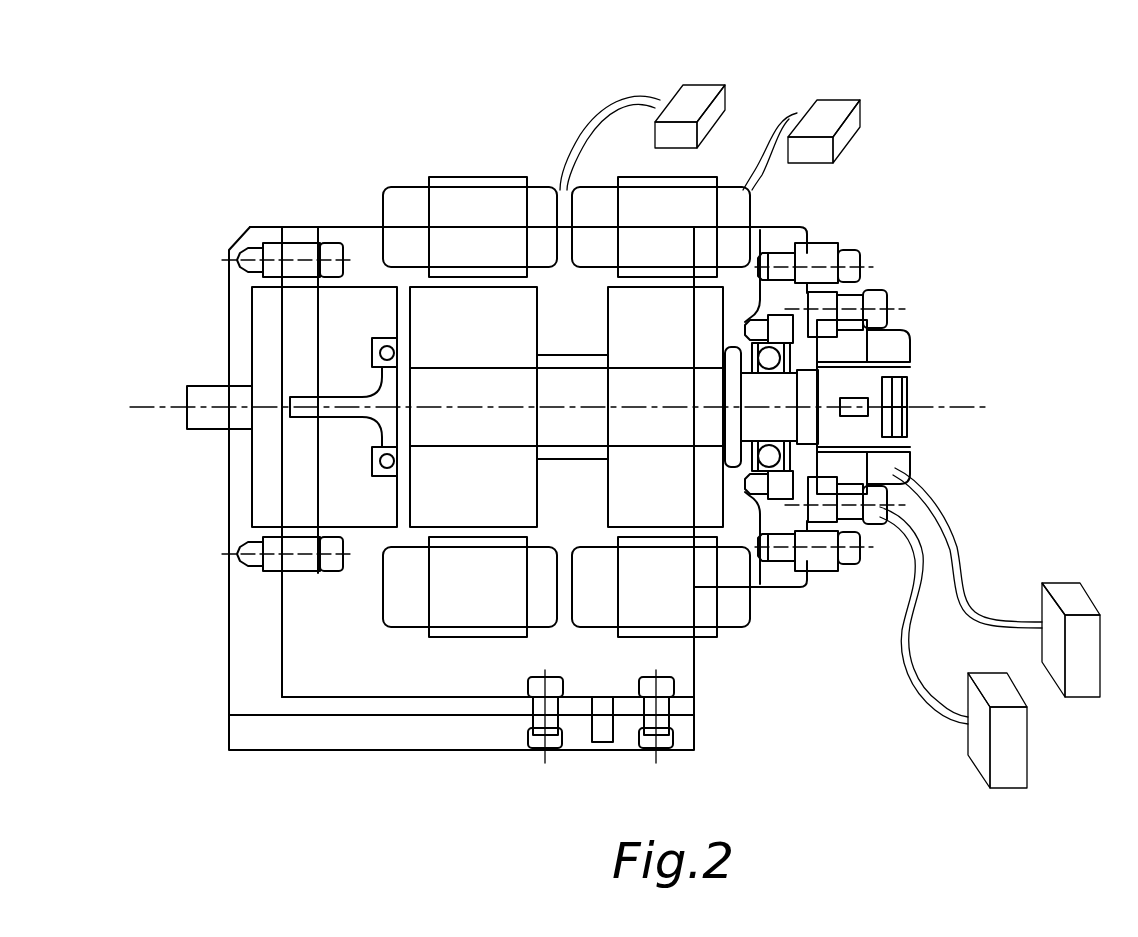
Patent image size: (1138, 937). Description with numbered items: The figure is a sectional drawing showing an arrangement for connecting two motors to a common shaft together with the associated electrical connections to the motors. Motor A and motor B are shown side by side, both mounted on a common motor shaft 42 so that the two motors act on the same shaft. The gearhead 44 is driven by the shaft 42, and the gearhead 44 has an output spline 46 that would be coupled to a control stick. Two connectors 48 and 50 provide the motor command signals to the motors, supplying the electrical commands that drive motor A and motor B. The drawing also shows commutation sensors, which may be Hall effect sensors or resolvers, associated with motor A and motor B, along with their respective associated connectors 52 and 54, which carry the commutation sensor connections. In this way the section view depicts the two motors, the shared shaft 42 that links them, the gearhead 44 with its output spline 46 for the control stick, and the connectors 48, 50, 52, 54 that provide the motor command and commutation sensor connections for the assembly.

The motor shaft 42 is at (477, 446).
The gearhead 44 is at (283, 448).
The output spline 46 is at (183, 403).
The connector 48 is at (683, 85).
The connector 50 is at (862, 103).
The connector 52 is at (1030, 758).
The connector 54 is at (1067, 583).
The motor A is at (467, 175).
The motor B is at (655, 176).